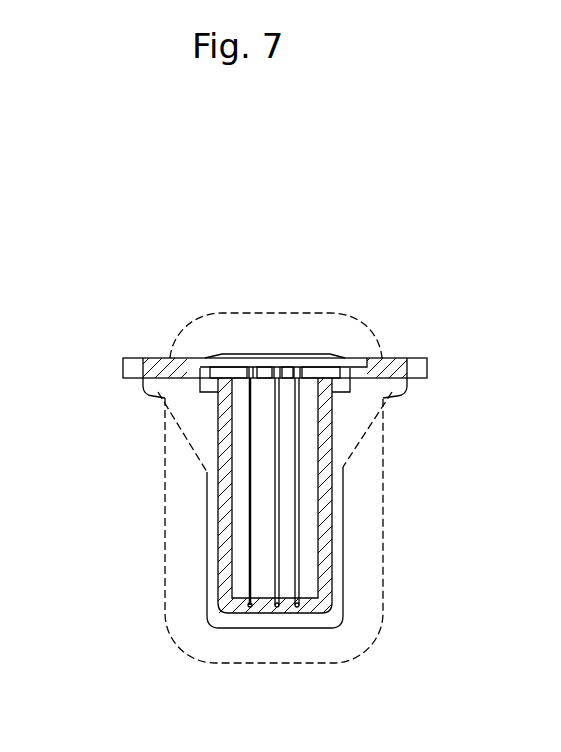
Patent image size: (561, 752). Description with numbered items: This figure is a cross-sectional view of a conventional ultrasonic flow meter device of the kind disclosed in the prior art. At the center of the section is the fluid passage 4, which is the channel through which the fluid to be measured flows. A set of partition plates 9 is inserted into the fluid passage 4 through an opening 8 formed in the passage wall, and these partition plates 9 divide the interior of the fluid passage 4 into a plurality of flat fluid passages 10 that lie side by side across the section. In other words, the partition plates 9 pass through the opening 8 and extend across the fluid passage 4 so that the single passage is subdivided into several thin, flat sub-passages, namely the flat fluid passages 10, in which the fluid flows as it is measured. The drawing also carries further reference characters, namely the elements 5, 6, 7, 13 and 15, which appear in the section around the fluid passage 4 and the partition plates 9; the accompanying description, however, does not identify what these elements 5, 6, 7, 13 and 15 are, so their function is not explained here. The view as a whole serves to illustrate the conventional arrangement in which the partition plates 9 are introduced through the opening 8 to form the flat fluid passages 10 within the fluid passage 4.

The fluid passage 4 is at (310, 437).
The cover sleeve 5 is at (318, 488).
The thick contact pin 6 is at (262, 522).
The central contact pin 7 is at (282, 607).
The opening 8 is at (290, 360).
The partition plates 9 is at (252, 508).
The flat fluid passages 10 is at (262, 568).
The housing bottom 13 is at (250, 608).
The contact block 15 is at (227, 362).